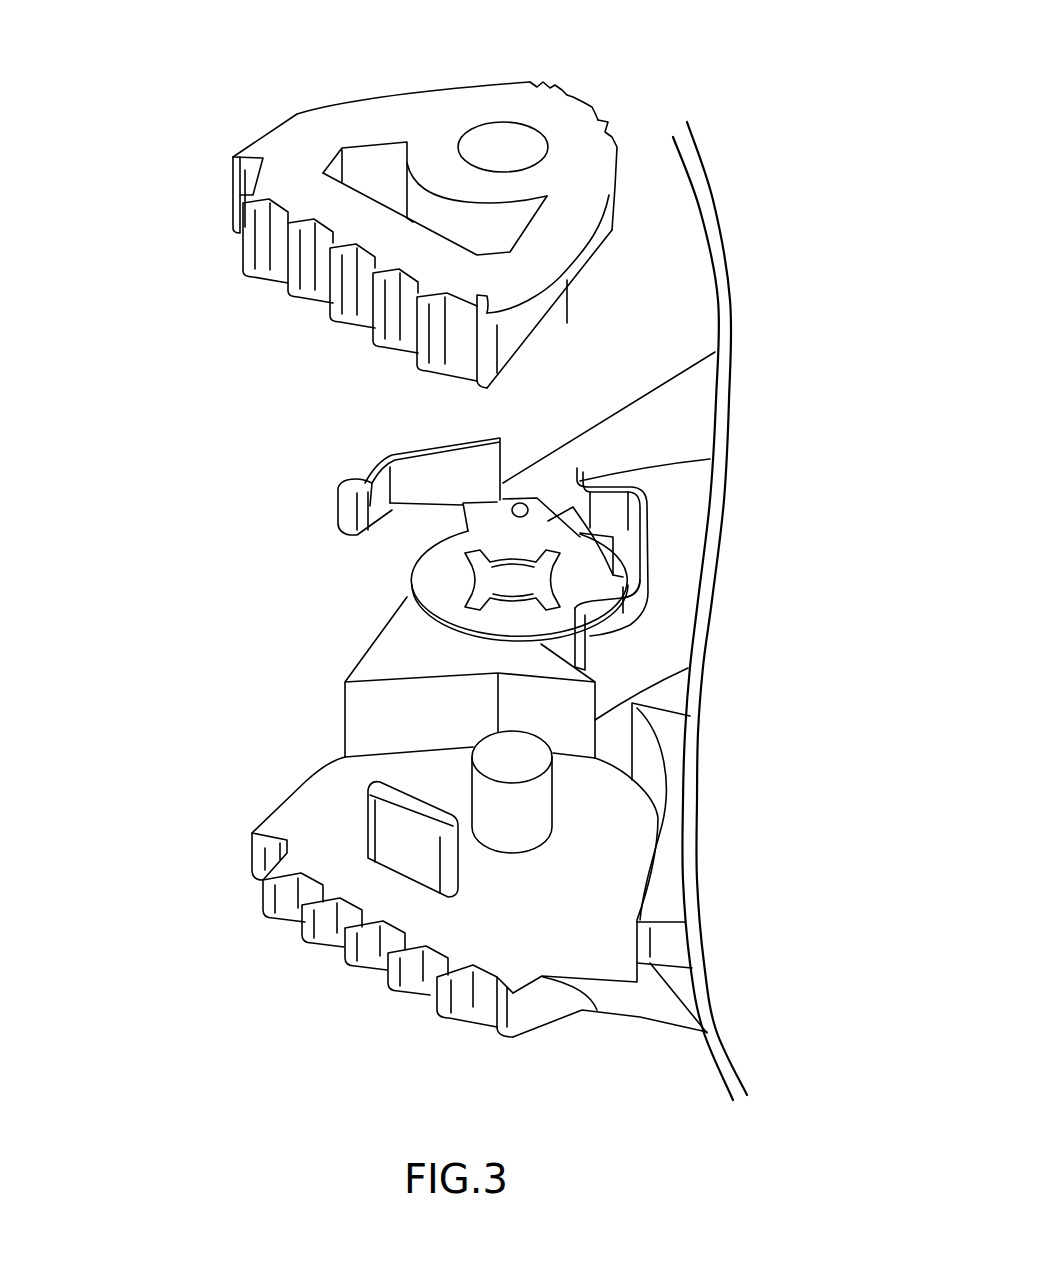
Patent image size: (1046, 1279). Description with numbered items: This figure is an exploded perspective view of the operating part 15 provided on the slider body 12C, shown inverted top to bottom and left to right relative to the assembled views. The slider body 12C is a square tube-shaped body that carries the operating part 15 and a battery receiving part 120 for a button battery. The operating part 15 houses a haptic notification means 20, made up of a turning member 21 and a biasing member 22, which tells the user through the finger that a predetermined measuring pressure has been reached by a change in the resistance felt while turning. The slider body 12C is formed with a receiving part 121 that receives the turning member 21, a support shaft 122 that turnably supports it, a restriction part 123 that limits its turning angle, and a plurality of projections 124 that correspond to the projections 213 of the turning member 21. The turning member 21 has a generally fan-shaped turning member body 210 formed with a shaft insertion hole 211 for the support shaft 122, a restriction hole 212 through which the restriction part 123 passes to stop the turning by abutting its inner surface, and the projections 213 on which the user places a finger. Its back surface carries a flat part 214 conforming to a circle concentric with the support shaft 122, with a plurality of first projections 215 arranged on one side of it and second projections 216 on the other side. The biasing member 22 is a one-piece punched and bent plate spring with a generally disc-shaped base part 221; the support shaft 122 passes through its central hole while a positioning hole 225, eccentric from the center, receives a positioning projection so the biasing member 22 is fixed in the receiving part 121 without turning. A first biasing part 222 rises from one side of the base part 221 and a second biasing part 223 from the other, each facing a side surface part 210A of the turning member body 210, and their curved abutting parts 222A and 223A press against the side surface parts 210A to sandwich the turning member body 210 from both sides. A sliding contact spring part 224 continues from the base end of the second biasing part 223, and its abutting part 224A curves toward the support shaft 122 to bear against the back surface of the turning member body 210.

The operating part 15 is at (287, 986).
The slider body 12C is at (365, 668).
The battery receiving part 120 is at (683, 485).
The receiving part 121 is at (401, 758).
The support shaft 122 is at (555, 785).
The restriction part 123 is at (367, 822).
The projections 124 is at (303, 945).
The haptic notification means 20 is at (191, 436).
The turning member 21 is at (194, 300).
The turning member body 210 is at (420, 97).
The side surface part 210A is at (593, 268).
The shaft insertion hole 211 is at (503, 130).
The restriction hole 212 is at (361, 148).
The projections 213 is at (280, 297).
The flat part 214 is at (585, 102).
The first projections 215 is at (551, 88).
The second projections 216 is at (600, 118).
The biasing member 22 is at (295, 497).
The base part 221 is at (424, 578).
The first biasing part 222 is at (366, 474).
The abutting part 222A is at (360, 538).
The second biasing part 223 is at (600, 630).
The abutting part 223A is at (640, 590).
The sliding contact spring part 224 is at (603, 480).
The abutting part 224A is at (582, 505).
The positioning hole 225 is at (522, 502).